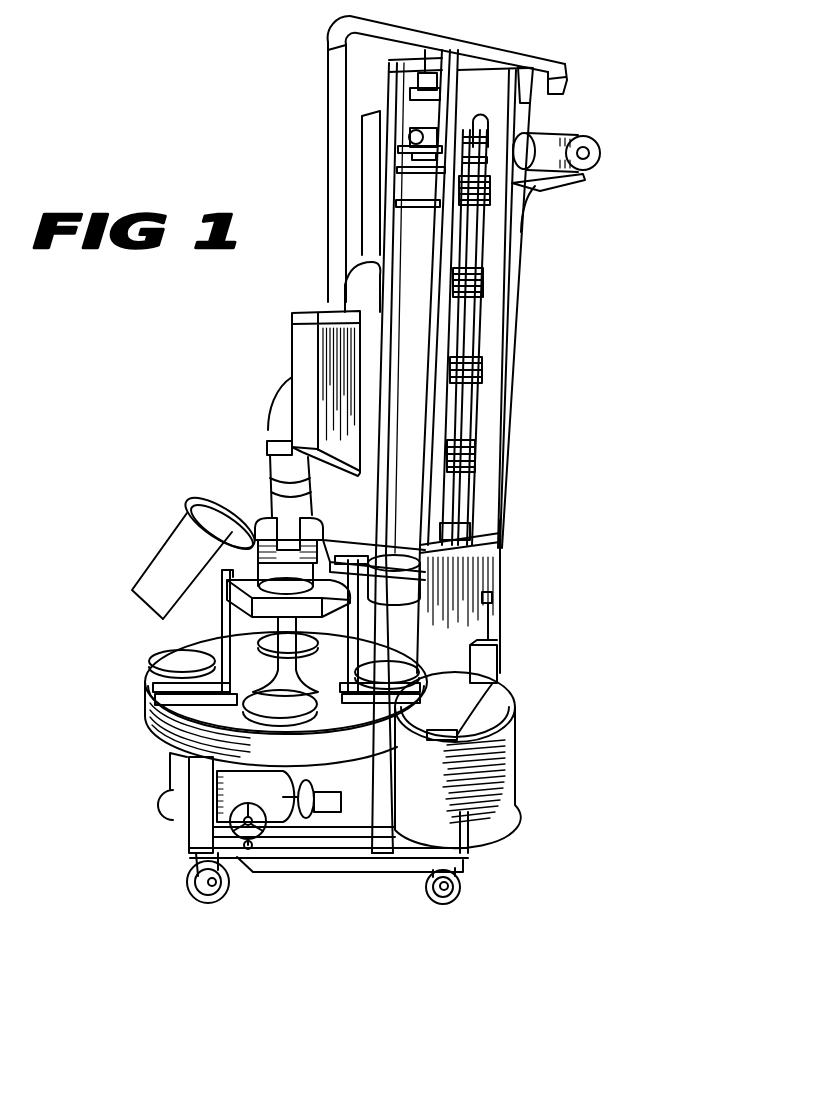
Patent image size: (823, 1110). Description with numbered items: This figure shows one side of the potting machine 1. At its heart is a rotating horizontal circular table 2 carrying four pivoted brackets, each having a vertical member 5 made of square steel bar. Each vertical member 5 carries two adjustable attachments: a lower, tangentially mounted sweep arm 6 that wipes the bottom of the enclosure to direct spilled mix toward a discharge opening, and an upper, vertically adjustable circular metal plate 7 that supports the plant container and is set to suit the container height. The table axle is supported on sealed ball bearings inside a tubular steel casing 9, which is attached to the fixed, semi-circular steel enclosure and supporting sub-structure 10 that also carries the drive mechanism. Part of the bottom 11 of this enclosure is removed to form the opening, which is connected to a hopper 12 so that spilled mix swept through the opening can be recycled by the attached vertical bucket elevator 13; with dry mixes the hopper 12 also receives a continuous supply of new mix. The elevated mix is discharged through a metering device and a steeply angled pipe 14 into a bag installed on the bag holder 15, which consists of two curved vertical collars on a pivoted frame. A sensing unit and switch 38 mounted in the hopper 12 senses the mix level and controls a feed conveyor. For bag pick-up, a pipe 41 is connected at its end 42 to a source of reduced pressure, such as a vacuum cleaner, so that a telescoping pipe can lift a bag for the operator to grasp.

The machine 1 is at (582, 515).
The rotating horizontal circular table 2 is at (250, 597).
The vertical member 5 is at (222, 622).
The sweep arm 6 is at (250, 672).
The circular metal plate 7 is at (163, 662).
The tubular steel casing 9 is at (163, 707).
The semi-circular steel enclosure and supporting sub-structure 10 is at (163, 742).
The bottom of the enclosure 11 is at (168, 762).
The hopper 12 is at (505, 799).
The vertical bucket elevator 13 is at (503, 420).
The steeply angled pipe 14 is at (277, 423).
The bag holder 15 is at (197, 494).
The sensing unit and switch 38 is at (499, 681).
The pipe 41 is at (330, 120).
The end of the pipe 42 is at (566, 81).